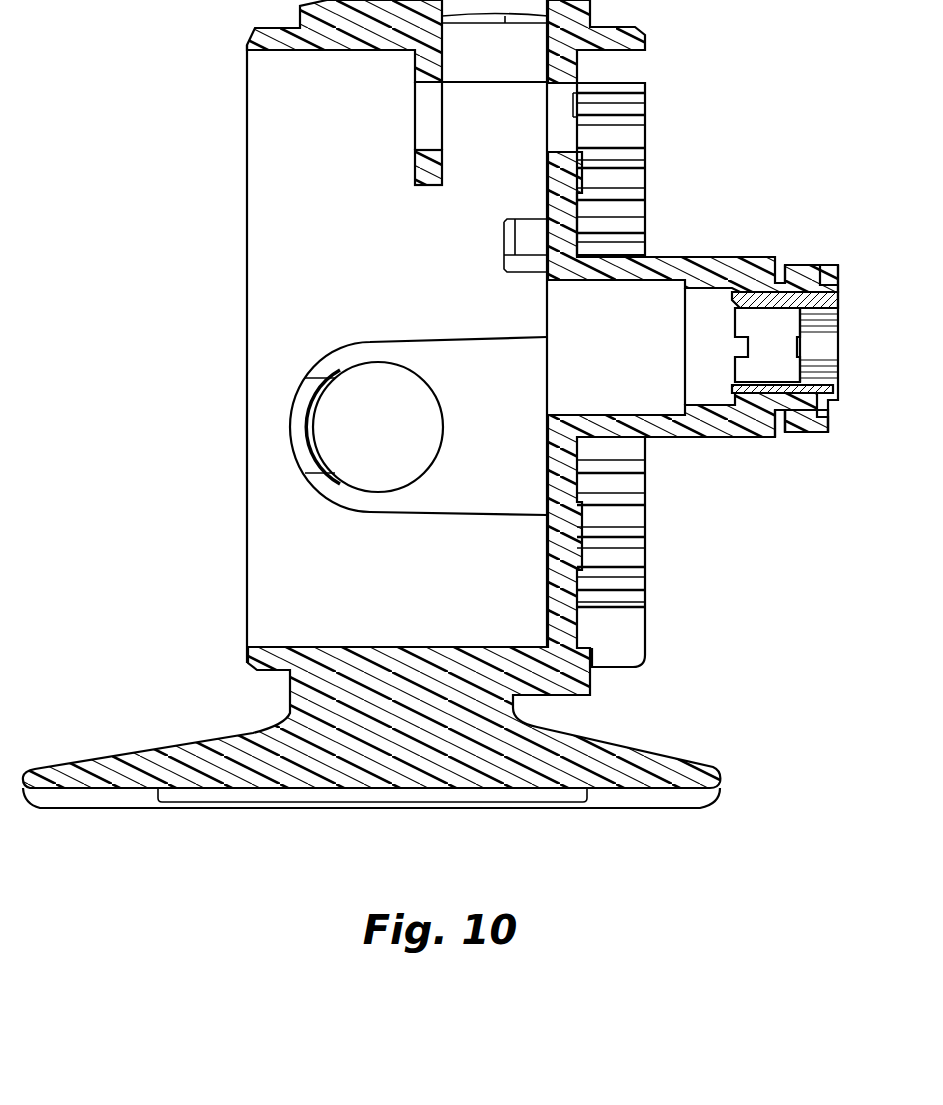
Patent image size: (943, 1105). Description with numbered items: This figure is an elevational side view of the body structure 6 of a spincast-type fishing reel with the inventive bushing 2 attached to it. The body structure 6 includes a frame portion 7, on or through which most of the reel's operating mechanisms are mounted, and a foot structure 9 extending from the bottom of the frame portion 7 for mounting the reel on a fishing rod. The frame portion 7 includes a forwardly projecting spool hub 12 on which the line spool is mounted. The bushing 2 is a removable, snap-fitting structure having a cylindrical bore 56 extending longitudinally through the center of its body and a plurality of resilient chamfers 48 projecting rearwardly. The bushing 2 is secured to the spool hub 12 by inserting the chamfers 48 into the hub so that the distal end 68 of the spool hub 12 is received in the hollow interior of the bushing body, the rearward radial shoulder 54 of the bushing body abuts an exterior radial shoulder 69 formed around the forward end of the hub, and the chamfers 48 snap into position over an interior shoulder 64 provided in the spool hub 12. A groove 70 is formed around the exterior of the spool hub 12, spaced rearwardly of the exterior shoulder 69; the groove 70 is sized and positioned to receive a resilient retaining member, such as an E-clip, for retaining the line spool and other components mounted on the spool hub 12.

The body structure 6 is at (292, 137).
The frame portion 7 is at (283, 247).
The foot structure 9 is at (195, 755).
The spool hub 12 is at (713, 268).
The radial shoulder 54 is at (790, 266).
The distal end 68 is at (820, 267).
The bushing 2 is at (833, 303).
The resilient chamfers 48 is at (735, 386).
The cylindrical bore 56 is at (820, 383).
The exterior radial shoulder 69 is at (812, 432).
The interior shoulder 64 is at (733, 397).
The groove 70 is at (778, 425).